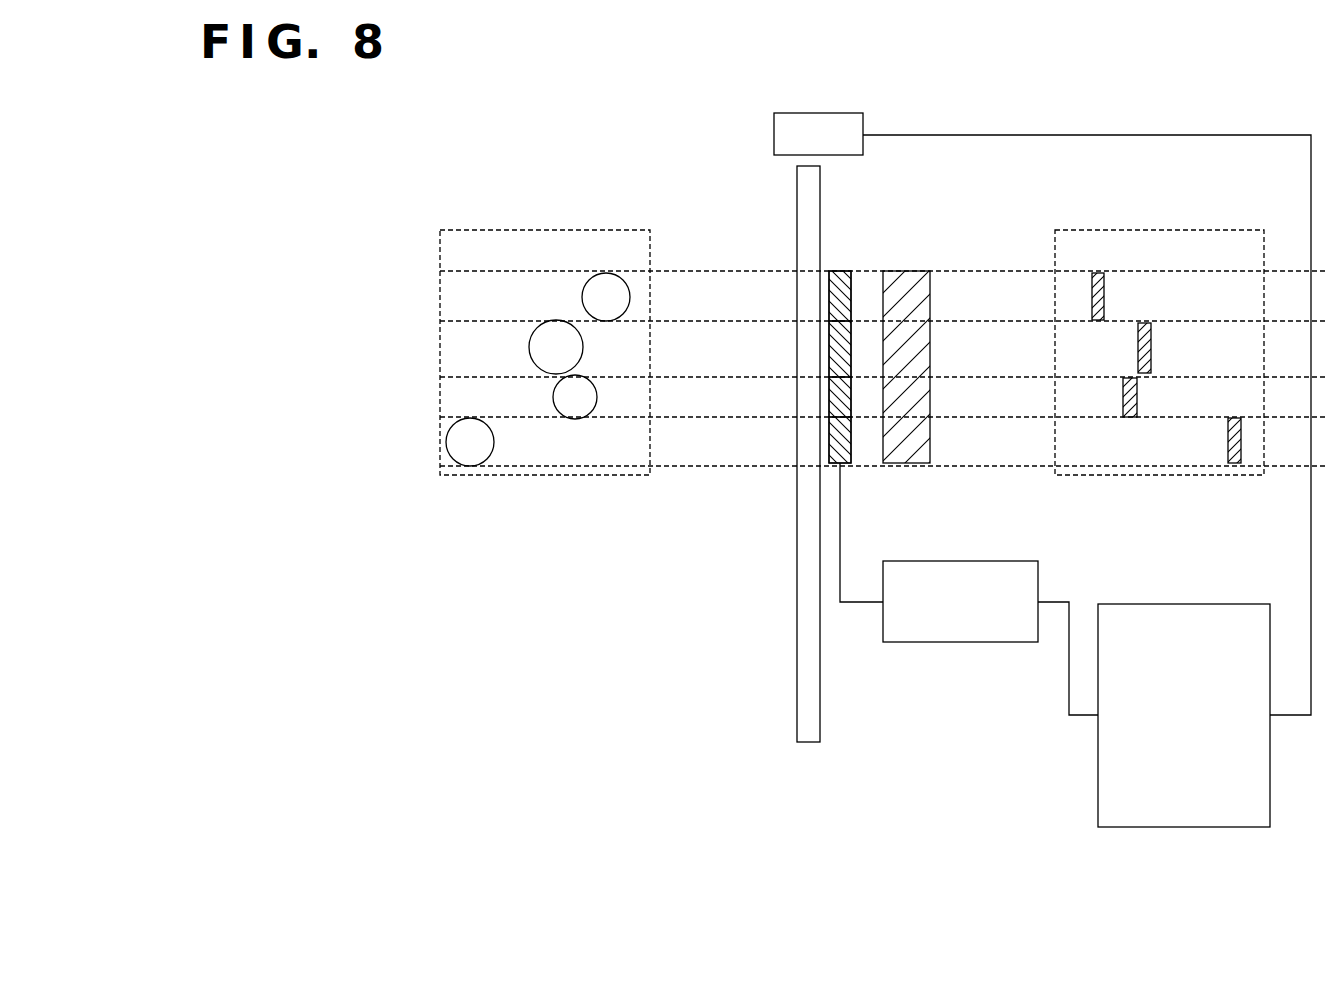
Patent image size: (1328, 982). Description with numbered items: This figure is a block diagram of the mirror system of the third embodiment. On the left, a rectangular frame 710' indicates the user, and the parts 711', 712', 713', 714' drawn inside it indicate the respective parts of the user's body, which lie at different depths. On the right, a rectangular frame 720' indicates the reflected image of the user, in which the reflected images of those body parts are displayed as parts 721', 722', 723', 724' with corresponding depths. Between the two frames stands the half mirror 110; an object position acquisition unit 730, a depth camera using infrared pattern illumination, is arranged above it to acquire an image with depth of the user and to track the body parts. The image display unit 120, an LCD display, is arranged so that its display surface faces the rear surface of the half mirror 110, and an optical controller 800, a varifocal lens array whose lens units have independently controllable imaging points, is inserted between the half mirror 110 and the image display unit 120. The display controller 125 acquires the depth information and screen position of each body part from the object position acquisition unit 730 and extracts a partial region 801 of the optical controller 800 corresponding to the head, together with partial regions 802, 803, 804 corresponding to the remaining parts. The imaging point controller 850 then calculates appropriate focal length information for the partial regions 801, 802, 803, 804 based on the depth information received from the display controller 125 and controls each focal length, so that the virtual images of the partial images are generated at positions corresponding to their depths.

The rectangular frame indicating the user 710' is at (545, 323).
The part of the body of the user (head) 711' is at (560, 297).
The part of the body of the user 712' is at (516, 347).
The part of the body of the user 713' is at (535, 397).
The part of the body of the user 714' is at (519, 442).
The rectangular frame indicating the reflected image of the user 720' is at (1159, 323).
The reflected image of part (head) 721' is at (1147, 296).
The reflected image of part 722' is at (1193, 348).
The reflected image of part 723' is at (1178, 397).
The reflected image of part 724' is at (1187, 440).
The object position acquisition unit 730 is at (812, 113).
The optical controller 800 is at (841, 263).
The partial region of the optical controller 801 is at (829, 300).
The partial region of the optical controller 802 is at (829, 346).
The partial region of the optical controller 803 is at (829, 393).
The partial region of the optical controller 804 is at (829, 438).
The image display unit 120 is at (932, 290).
The half mirror 110 is at (797, 658).
The imaging point controller 850 is at (997, 642).
The display controller 125 is at (1098, 790).